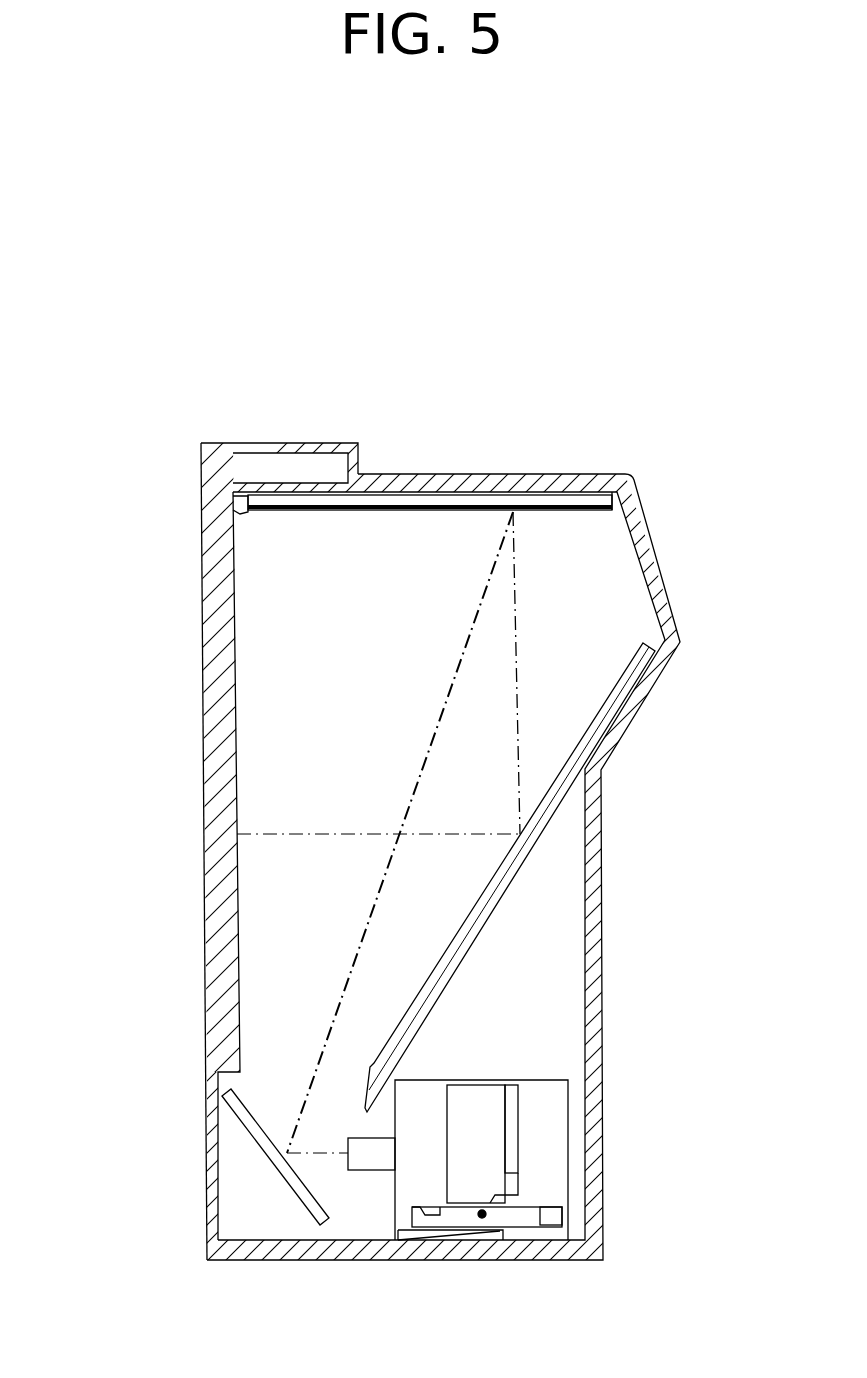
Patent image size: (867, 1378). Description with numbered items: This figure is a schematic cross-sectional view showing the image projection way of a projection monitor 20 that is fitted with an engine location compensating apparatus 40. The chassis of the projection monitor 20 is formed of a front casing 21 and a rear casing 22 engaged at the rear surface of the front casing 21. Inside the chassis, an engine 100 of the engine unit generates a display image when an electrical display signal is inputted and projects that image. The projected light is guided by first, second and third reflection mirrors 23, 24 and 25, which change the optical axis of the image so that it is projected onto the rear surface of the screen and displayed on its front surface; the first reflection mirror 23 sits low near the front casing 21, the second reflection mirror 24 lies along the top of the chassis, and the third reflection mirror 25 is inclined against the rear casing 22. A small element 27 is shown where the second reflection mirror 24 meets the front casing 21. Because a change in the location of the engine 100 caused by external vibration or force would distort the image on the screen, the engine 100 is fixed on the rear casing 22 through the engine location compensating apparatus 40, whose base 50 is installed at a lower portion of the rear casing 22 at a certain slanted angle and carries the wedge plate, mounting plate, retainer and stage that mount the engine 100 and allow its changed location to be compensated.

The projection monitor 20 is at (78, 333).
The front casing 21 is at (210, 627).
The rear casing 22 is at (653, 545).
The first reflection mirror 23 is at (262, 1148).
The second reflection mirror 24 is at (518, 498).
The third reflection mirror 25 is at (578, 748).
The support member 27 is at (232, 521).
The engine location compensating apparatus 40 is at (552, 1139).
The base 50 is at (486, 1228).
The engine 100 is at (490, 1085).